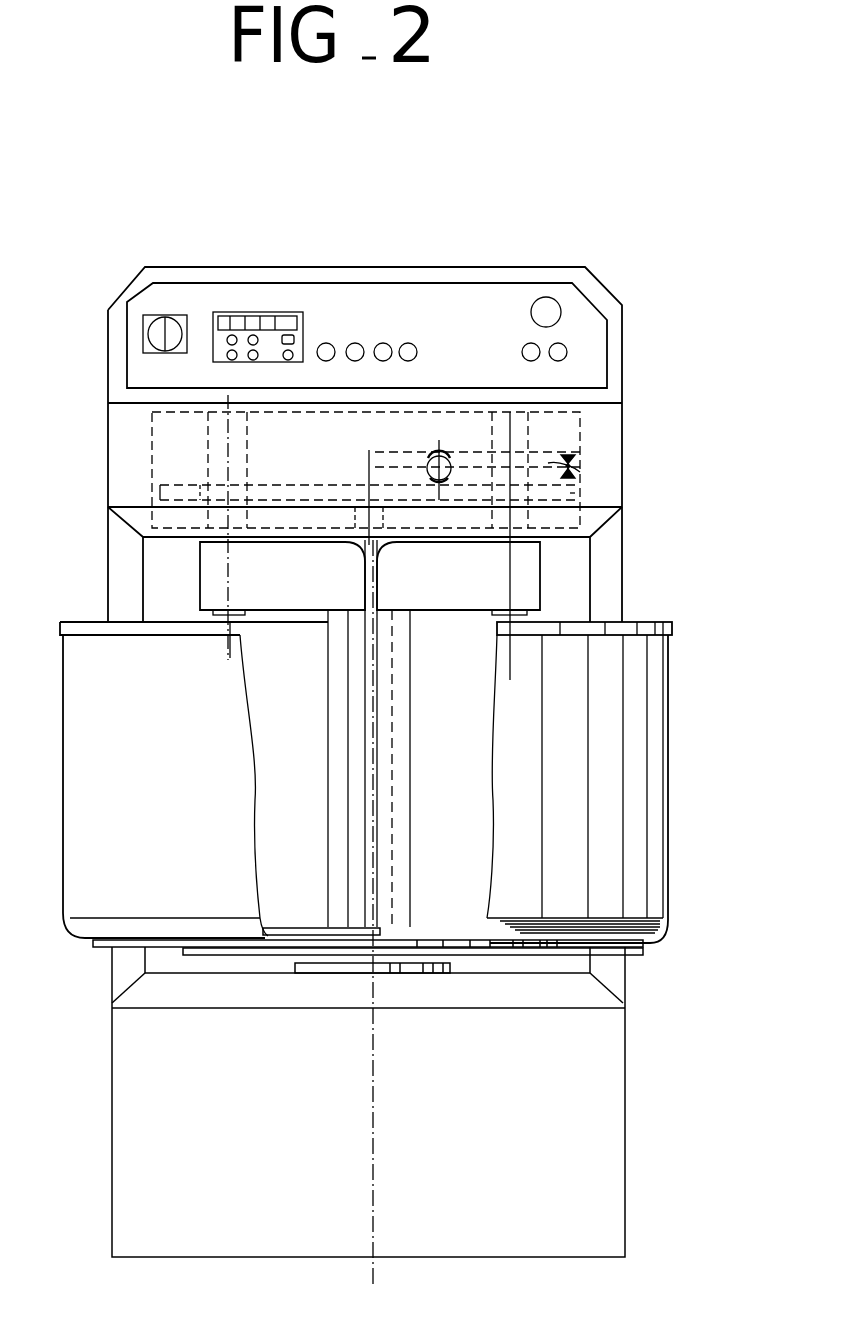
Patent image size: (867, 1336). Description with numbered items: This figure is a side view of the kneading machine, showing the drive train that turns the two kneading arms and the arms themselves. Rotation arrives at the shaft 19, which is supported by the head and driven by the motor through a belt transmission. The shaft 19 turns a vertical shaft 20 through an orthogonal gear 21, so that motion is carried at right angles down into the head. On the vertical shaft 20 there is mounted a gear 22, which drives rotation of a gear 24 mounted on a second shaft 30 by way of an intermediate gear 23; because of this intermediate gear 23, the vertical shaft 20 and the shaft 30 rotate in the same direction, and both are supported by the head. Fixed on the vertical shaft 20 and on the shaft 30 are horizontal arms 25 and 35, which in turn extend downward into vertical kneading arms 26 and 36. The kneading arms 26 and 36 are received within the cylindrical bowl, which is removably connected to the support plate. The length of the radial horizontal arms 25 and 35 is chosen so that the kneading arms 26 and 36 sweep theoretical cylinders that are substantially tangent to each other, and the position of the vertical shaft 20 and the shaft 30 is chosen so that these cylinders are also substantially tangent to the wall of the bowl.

The shaft 19 is at (448, 456).
The vertical shaft 20 is at (530, 442).
The orthogonal gear 21 is at (580, 472).
The gear 22 is at (570, 493).
The intermediate gear 23 is at (345, 490).
The gear 24 is at (197, 495).
The horizontal arm 25 is at (488, 572).
The kneading arm 26 is at (403, 777).
The shaft 30 is at (207, 432).
The horizontal arm 35 is at (273, 568).
The kneading arm 36 is at (347, 785).